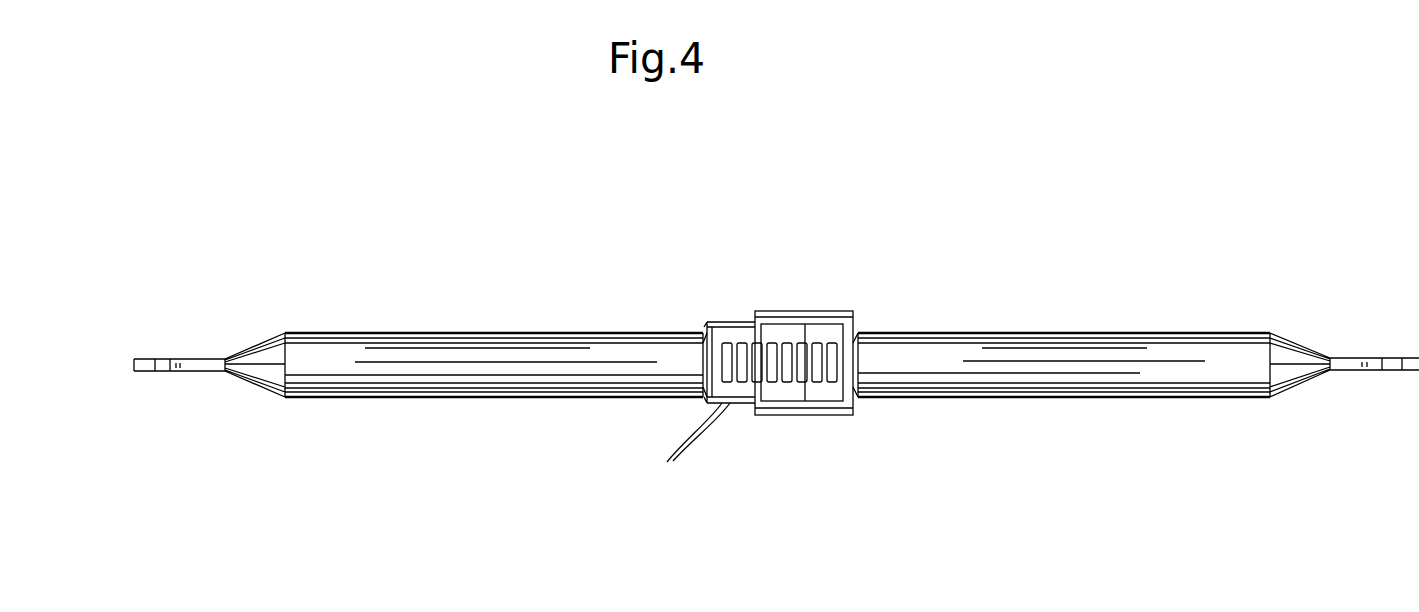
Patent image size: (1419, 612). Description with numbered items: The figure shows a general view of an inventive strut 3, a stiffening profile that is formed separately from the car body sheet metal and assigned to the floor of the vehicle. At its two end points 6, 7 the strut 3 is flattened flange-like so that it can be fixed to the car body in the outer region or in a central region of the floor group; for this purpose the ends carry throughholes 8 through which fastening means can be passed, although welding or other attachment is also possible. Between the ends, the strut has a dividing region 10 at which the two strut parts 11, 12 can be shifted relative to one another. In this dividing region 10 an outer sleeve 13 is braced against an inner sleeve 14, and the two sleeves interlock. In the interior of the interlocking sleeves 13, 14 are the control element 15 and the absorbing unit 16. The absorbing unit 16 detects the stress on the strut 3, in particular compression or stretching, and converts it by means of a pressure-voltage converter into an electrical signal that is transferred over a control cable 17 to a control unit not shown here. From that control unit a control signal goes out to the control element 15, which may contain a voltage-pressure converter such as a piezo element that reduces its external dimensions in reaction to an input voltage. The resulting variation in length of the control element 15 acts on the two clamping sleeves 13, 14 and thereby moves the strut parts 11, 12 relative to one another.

The strut 3 is at (881, 331).
The end point 6 is at (148, 372).
The end point 7 is at (1413, 371).
The throughhole 8 is at (167, 357).
The dividing region 10 is at (753, 312).
The strut part 11 is at (573, 347).
The strut part 12 is at (1032, 356).
The outer sleeve 13 is at (797, 317).
The inner sleeve 14 is at (740, 398).
The control element 15 is at (812, 360).
The absorbing unit 16 is at (742, 357).
The control cable 17 is at (672, 466).